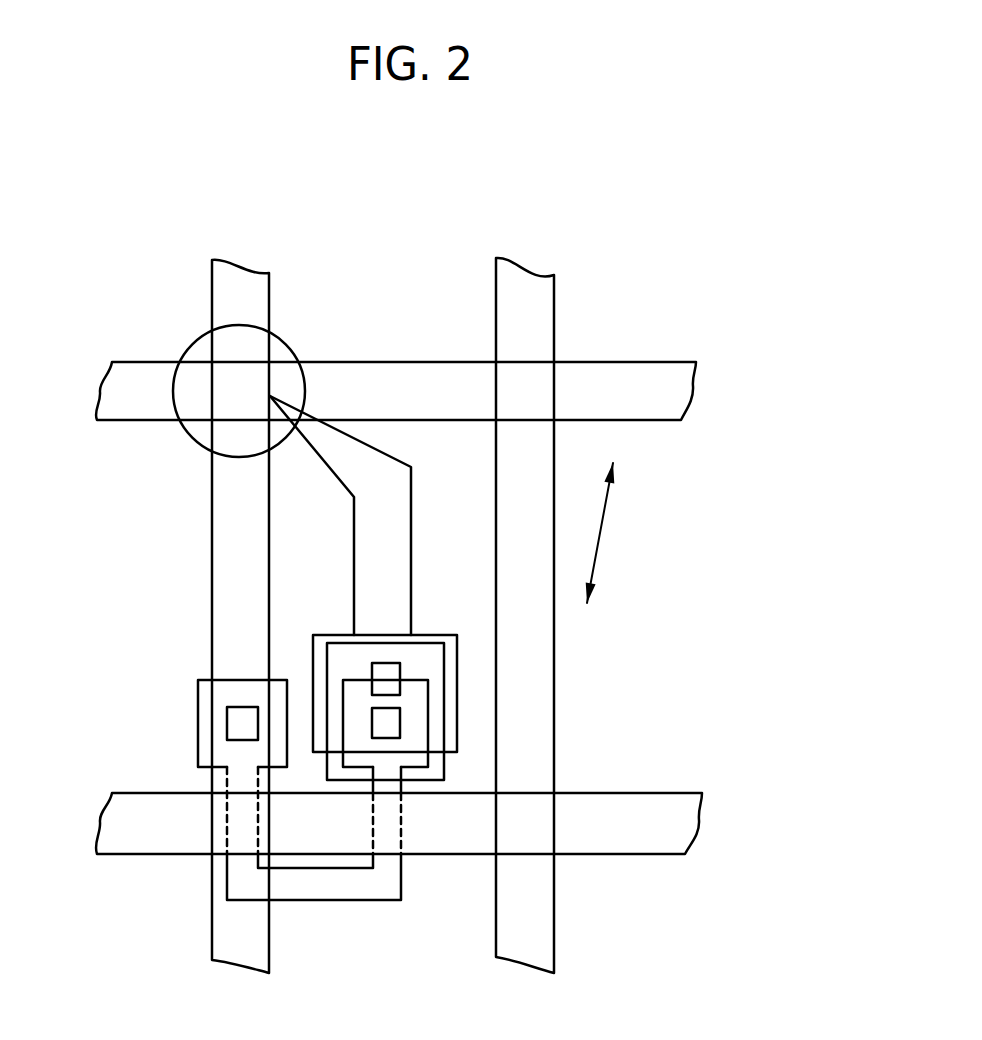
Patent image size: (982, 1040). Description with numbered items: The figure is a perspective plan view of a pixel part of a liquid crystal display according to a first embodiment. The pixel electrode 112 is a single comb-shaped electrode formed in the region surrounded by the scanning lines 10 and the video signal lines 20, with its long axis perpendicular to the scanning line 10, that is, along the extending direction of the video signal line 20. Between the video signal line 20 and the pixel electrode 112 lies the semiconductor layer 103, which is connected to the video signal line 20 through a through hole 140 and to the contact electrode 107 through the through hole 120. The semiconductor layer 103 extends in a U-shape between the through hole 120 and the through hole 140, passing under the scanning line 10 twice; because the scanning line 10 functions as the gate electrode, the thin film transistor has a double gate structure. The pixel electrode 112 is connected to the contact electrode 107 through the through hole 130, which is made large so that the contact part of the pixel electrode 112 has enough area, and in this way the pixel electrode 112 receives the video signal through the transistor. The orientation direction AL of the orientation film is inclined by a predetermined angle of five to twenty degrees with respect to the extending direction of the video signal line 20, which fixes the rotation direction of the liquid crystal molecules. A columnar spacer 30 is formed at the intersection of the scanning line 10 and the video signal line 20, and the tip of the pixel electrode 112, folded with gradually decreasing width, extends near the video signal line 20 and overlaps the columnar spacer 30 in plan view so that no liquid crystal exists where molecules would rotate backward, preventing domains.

The scanning line 10 is at (703, 826).
The video signal line 20 is at (531, 272).
The columnar spacer 30 is at (192, 342).
The semiconductor layer 103 is at (328, 901).
The contact electrode 107 is at (447, 707).
The pixel electrode 112 is at (413, 538).
The through hole 120 is at (372, 724).
The through hole 130 is at (371, 674).
The through hole 140 is at (243, 727).
The orientation direction AL is at (607, 518).